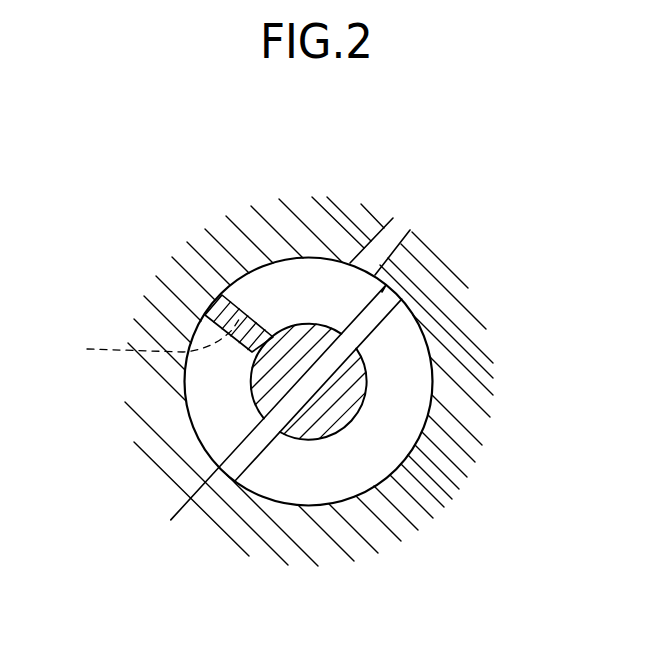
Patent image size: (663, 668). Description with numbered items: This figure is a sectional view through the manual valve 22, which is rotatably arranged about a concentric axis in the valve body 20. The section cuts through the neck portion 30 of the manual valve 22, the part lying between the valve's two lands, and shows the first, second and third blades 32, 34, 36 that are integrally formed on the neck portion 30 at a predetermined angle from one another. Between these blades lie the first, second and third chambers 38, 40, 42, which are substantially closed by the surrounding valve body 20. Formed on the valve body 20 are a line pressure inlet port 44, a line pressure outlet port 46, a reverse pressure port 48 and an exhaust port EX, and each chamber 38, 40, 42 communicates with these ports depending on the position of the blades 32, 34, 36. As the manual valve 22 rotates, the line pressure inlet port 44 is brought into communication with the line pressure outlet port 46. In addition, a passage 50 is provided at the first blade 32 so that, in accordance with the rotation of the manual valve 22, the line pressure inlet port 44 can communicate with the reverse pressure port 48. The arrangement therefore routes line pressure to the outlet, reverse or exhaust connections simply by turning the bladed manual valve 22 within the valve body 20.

The valve body 20 is at (465, 332).
The manual valve 22 is at (372, 388).
The neck portion 30 is at (338, 440).
The first blade 32 is at (210, 297).
The second blade 34 is at (400, 277).
The third blade 36 is at (171, 520).
The first chamber 38 is at (198, 410).
The second chamber 40 is at (318, 280).
The third chamber 42 is at (313, 487).
The line pressure inlet port 44 is at (265, 213).
The line pressure outlet port 46 is at (400, 232).
The reverse pressure port 48 is at (467, 442).
The passage 50 is at (141, 338).
The exhaust port EX is at (433, 498).